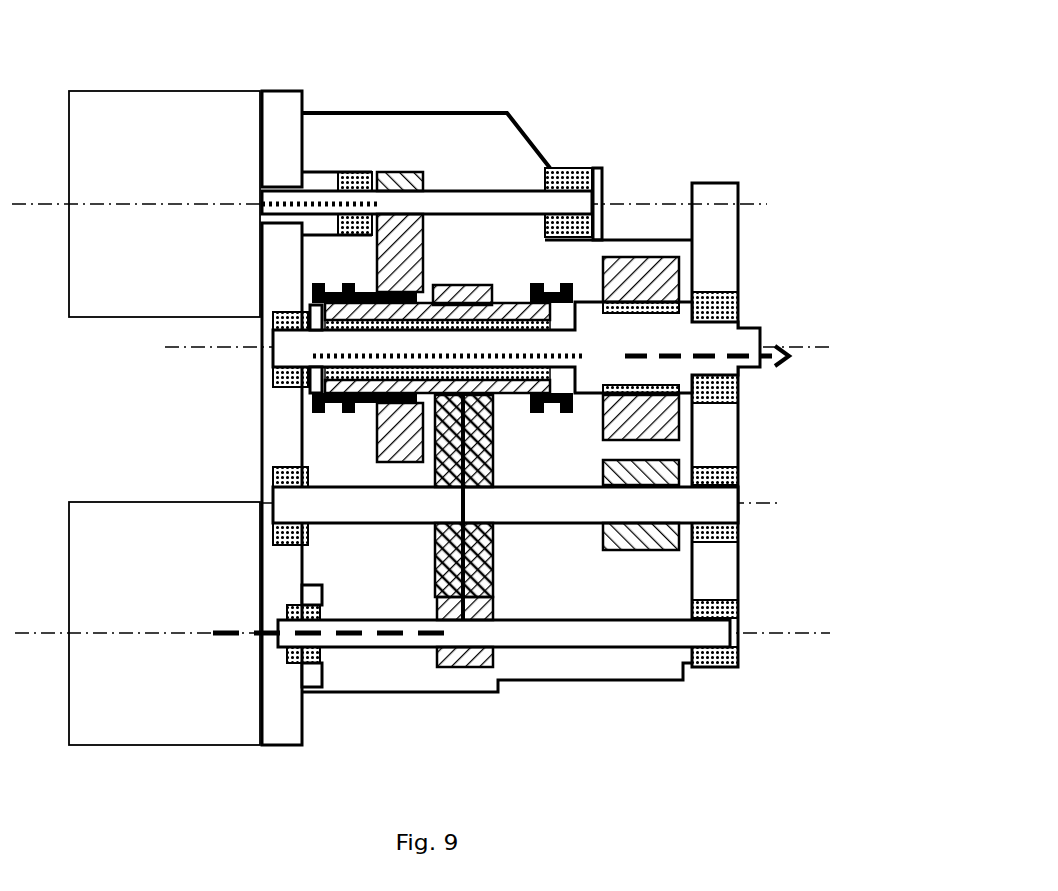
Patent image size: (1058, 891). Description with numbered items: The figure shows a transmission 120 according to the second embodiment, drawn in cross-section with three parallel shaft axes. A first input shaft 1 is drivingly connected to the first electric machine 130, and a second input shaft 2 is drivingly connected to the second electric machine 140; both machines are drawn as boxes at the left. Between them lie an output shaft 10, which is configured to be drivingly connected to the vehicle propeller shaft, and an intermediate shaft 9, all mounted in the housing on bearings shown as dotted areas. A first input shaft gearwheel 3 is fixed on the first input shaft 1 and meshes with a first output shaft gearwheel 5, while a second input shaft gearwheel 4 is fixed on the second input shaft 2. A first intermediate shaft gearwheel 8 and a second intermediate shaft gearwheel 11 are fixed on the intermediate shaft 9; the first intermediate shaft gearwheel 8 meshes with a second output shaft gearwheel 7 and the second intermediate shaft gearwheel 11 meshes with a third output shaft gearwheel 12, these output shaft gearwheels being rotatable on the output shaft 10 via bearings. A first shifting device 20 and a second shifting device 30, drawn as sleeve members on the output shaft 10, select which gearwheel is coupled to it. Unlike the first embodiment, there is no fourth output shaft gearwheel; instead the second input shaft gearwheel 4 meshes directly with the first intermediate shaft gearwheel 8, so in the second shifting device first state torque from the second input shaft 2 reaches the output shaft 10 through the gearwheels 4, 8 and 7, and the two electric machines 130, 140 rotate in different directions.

The first input shaft 1 is at (528, 200).
The second input shaft 2 is at (580, 640).
The first input shaft gearwheel 3 is at (414, 171).
The second input shaft gearwheel 4 is at (462, 668).
The first output shaft gearwheel 5 is at (396, 463).
The second output shaft gearwheel 7 is at (459, 285).
The first intermediate shaft gearwheel 8 is at (437, 583).
The intermediate shaft 9 is at (343, 497).
The output shaft 10 is at (569, 342).
The second intermediate shaft gearwheel 11 is at (620, 517).
The third output shaft gearwheel 12 is at (651, 258).
The first shifting device 20 is at (313, 405).
The second shifting device 30 is at (570, 283).
The transmission 120 is at (421, 384).
The first electric machine 130 is at (153, 175).
The second electric machine 140 is at (153, 590).